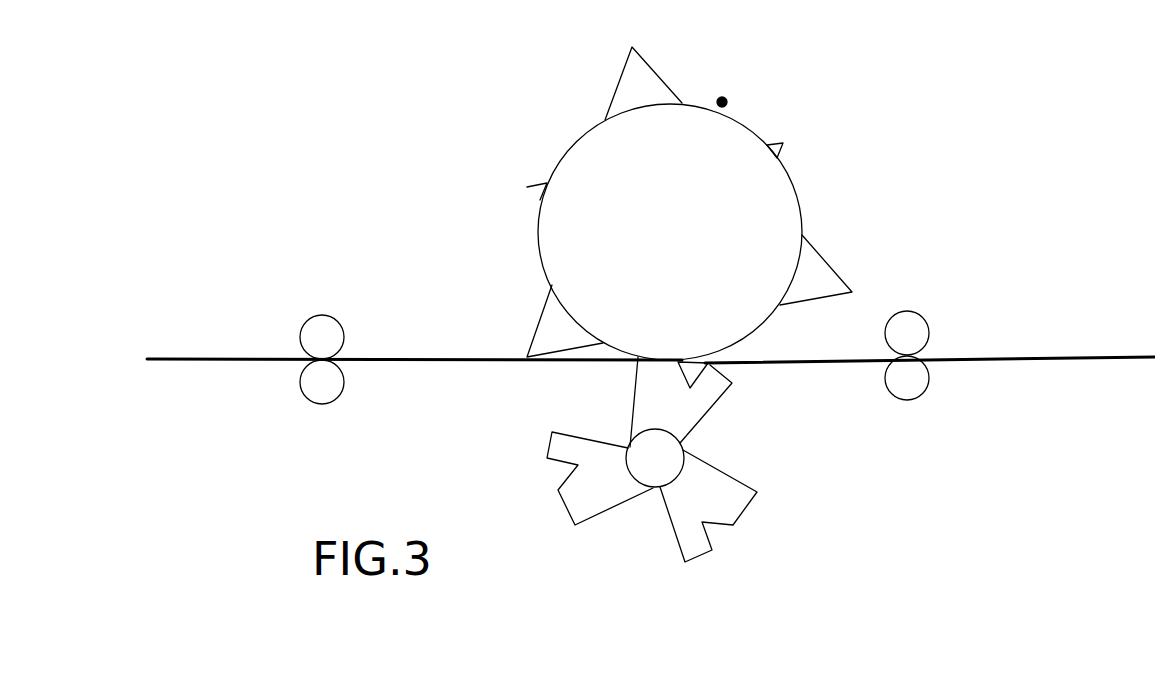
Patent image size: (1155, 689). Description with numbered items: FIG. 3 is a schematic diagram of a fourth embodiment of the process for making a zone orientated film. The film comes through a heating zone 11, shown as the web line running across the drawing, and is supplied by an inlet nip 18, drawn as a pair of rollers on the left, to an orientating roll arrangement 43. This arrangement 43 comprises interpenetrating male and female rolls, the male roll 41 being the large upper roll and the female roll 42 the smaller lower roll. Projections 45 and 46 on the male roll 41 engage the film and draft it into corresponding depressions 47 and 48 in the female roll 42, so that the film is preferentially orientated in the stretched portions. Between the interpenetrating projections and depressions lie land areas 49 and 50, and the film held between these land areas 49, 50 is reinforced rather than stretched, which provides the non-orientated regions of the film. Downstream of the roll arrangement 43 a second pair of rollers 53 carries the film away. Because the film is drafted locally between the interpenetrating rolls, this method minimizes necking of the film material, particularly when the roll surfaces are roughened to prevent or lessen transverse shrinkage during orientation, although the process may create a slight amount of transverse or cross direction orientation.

The heating zone 11 is at (200, 358).
The inlet nip 18 is at (328, 330).
The male roll 41 is at (780, 205).
The female roll 42 is at (675, 471).
The orientating roll arrangement 43 is at (712, 118).
The projection 45 is at (777, 143).
The projection 46 is at (813, 255).
The depression 47 is at (718, 528).
The depression 48 is at (670, 527).
The land area 49 is at (662, 360).
The land area 50 is at (618, 352).
The output rollers 53 is at (910, 327).